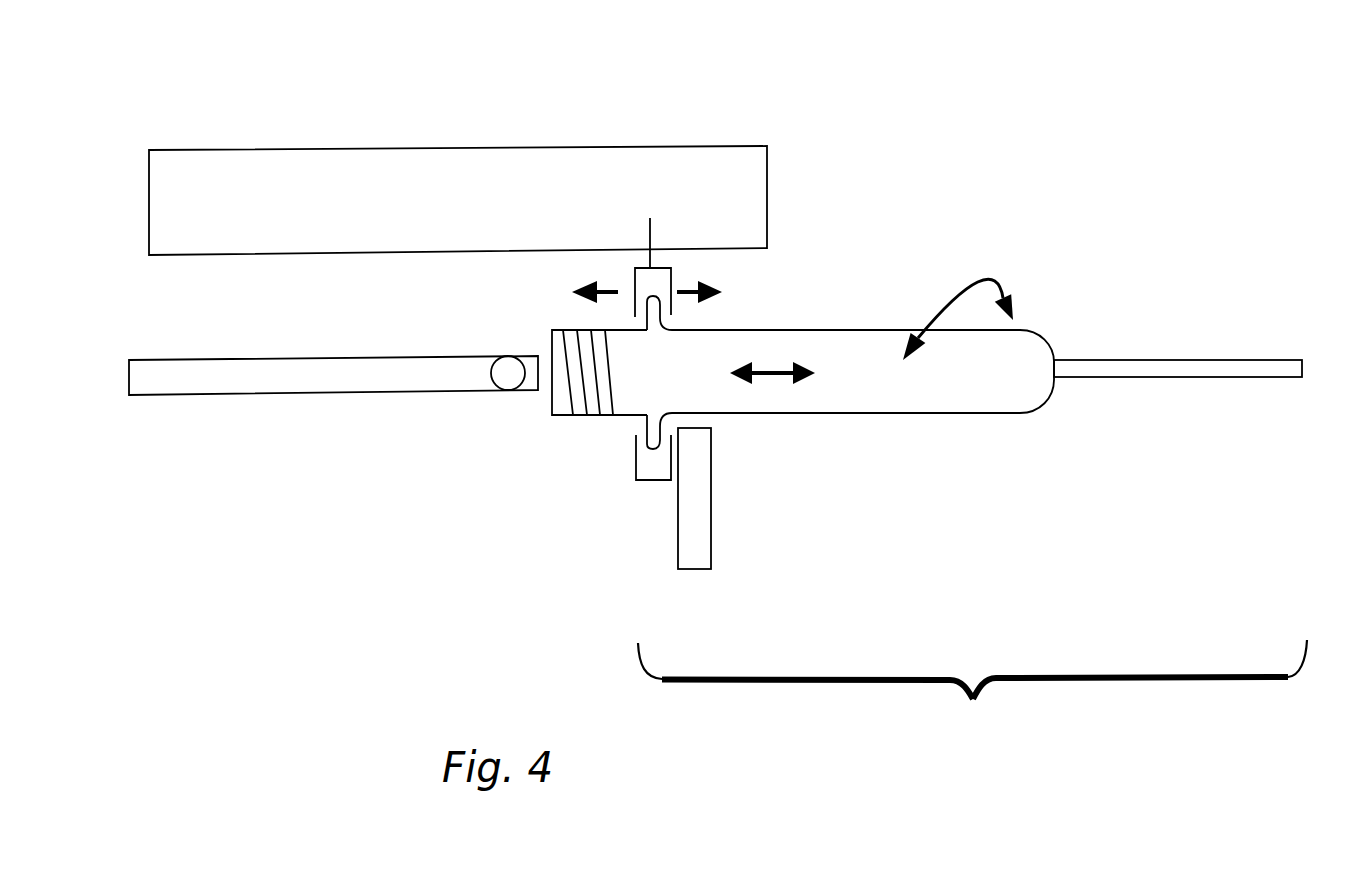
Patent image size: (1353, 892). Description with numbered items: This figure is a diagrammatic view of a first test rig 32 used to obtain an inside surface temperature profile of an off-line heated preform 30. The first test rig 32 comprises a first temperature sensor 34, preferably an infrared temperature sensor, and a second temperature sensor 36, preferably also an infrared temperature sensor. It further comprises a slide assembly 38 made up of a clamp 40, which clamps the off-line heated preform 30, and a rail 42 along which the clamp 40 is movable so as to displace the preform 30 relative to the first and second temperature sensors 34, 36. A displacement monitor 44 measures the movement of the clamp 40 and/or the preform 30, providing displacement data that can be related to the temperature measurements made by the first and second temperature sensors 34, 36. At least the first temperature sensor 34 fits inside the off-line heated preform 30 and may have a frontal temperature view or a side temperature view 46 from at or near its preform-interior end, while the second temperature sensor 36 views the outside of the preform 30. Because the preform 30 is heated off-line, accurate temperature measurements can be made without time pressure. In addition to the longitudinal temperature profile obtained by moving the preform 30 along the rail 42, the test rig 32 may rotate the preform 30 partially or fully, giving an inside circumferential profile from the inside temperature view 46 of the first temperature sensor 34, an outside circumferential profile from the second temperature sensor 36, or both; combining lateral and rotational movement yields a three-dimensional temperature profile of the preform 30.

The off-line heated preform 30 is at (1040, 408).
The first test rig 32 is at (1040, 176).
The first temperature sensor 34 is at (365, 392).
The second temperature sensor 36 is at (711, 548).
The slide assembly 38 is at (985, 682).
The clamp 40 is at (655, 481).
The rail 42 is at (1260, 358).
The displacement monitor 44 is at (407, 148).
The side temperature view 46 is at (508, 390).